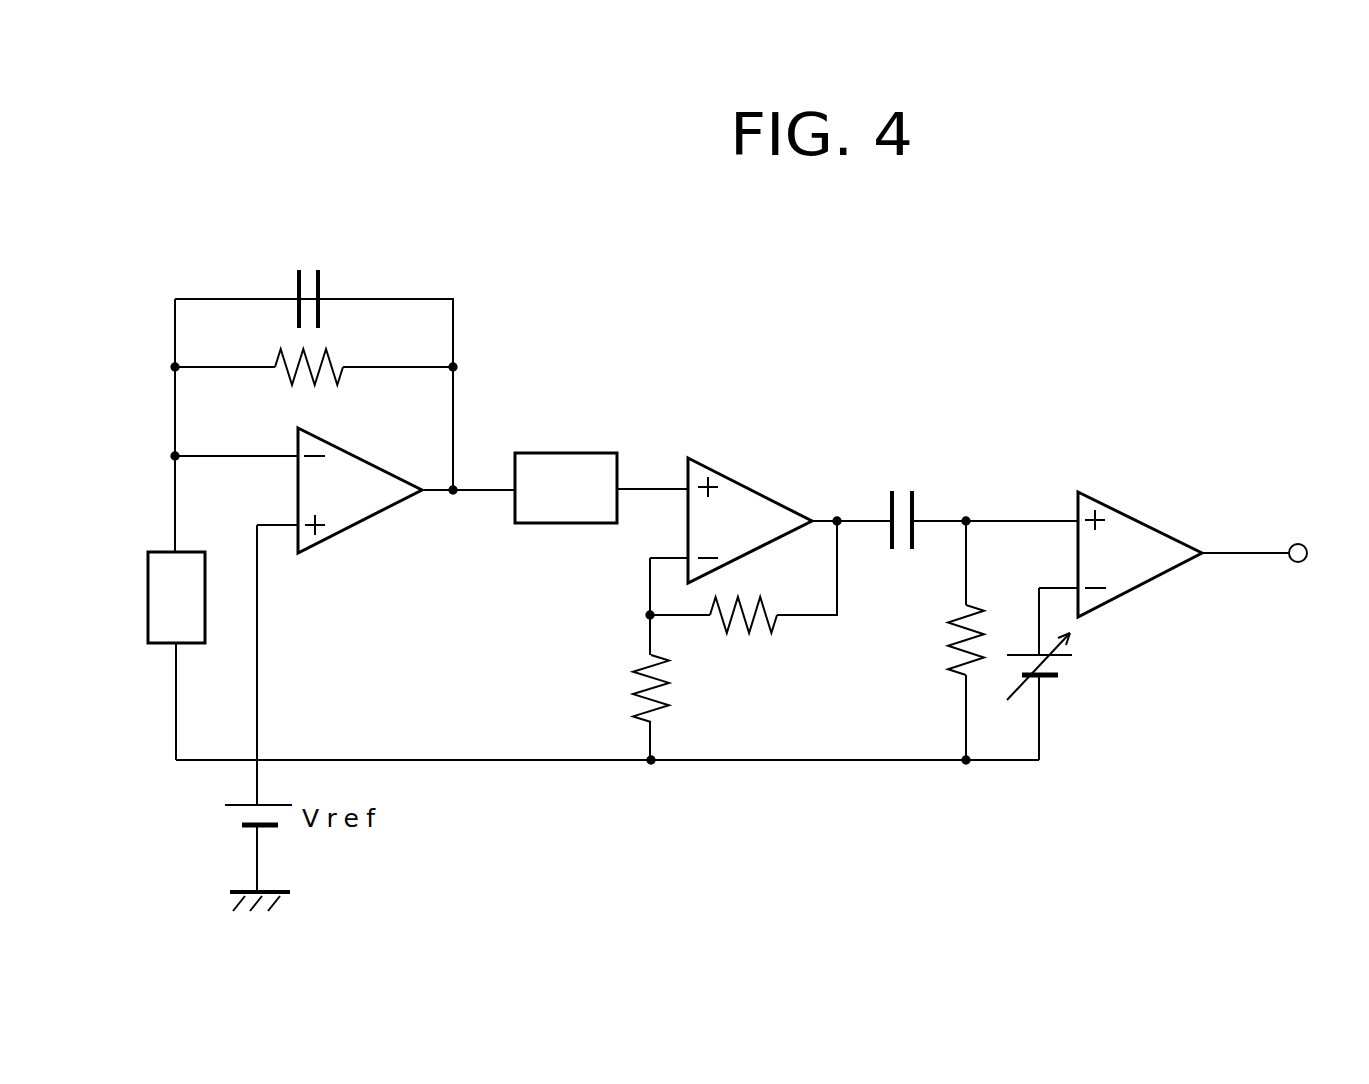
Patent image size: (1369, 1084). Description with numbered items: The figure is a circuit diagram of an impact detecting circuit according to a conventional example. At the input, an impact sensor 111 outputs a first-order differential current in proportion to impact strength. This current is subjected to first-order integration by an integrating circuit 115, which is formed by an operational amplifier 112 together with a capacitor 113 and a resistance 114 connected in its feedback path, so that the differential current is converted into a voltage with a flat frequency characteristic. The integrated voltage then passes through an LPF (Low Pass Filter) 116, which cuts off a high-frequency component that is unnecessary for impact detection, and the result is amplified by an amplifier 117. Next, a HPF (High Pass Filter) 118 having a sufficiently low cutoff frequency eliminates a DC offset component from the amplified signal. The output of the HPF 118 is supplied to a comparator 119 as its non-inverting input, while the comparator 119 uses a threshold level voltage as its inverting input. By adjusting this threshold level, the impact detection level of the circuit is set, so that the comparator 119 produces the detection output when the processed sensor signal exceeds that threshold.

The impact sensor 111 is at (148, 600).
The operational amplifier 112 is at (370, 512).
The capacitor 113 is at (310, 268).
The resistance 114 is at (282, 377).
The integrating circuit 115 is at (450, 268).
The LPF (Low Pass Filter) 116 is at (568, 452).
The amplifier 117 is at (768, 427).
The HPF (High Pass Filter) 118 is at (995, 471).
The comparator 119 is at (1148, 583).